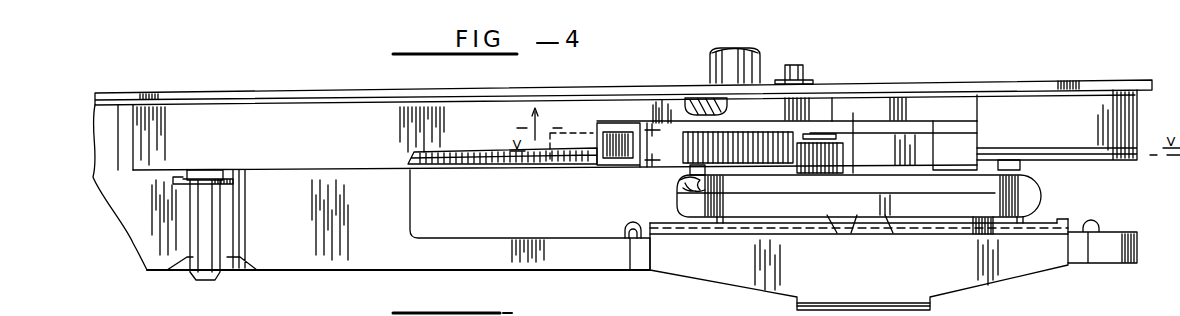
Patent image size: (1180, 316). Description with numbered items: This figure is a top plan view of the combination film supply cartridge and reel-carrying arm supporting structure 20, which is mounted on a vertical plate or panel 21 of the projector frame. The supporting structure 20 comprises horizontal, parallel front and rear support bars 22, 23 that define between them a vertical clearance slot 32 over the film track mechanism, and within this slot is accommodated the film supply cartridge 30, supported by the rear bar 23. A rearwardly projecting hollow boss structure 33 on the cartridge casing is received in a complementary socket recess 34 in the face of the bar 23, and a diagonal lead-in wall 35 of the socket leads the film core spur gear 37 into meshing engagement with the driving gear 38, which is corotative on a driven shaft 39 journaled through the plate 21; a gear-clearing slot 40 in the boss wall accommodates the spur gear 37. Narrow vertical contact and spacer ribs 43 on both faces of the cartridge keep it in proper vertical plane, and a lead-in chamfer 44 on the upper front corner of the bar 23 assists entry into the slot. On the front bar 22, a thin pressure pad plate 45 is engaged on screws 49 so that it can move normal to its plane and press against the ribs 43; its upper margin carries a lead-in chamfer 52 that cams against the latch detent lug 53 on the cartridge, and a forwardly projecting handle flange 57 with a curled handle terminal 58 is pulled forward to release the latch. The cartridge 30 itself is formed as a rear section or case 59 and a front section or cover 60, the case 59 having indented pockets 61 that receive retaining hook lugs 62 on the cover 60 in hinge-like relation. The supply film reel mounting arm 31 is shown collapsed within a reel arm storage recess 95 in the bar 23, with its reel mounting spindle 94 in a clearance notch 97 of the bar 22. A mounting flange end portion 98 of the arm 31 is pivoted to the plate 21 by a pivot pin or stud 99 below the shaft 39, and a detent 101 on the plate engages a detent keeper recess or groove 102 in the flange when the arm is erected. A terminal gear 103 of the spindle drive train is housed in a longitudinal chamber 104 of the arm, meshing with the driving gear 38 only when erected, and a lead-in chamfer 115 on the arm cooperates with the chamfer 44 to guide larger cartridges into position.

The supporting structure 20 is at (310, 284).
The vertical plate or panel 21 is at (273, 95).
The front support bar 22 is at (338, 257).
The rear support bar 23 is at (100, 125).
The film supply cartridge 30 is at (1060, 198).
The supply film reel mounting arm 31 is at (340, 125).
The clearance slot 32 is at (596, 232).
The boss structure 33 is at (955, 150).
The socket recess 34 is at (913, 122).
The diagonal lead-in wall 35 is at (957, 125).
The film core spur gear 37 is at (843, 158).
The driving gear 38 is at (683, 148).
The driven shaft 39 is at (745, 67).
The gear-clearing slot 40 is at (835, 133).
The contact and spacer ribs 43 is at (697, 171).
The lead-in chamfer 44 is at (1113, 161).
The pressure pad plate 45 is at (1058, 223).
The screws 49 is at (636, 228).
The lead-in chamfer 52 is at (940, 232).
The latch detent lug 53 is at (850, 222).
The handle flange 57 is at (978, 270).
The curled handle terminal 58 is at (915, 305).
The rear section or case 59 is at (750, 182).
The front section or cover 60 is at (958, 205).
The indented pockets 61 is at (680, 183).
The retaining hook lugs 62 is at (690, 192).
The reel mounting spindle 94 is at (213, 268).
The reel arm storage recess 95 is at (125, 115).
The clearance notch 97 is at (238, 252).
The mounting flange end portion 98 is at (665, 110).
The pivot pin or stud 99 is at (713, 50).
The detent 101 is at (808, 80).
The detent keeper recess or groove 102 is at (703, 97).
The terminal gear 103 is at (595, 160).
The longitudinal chamber 104 is at (600, 125).
The lead-in chamfer 115 is at (473, 163).